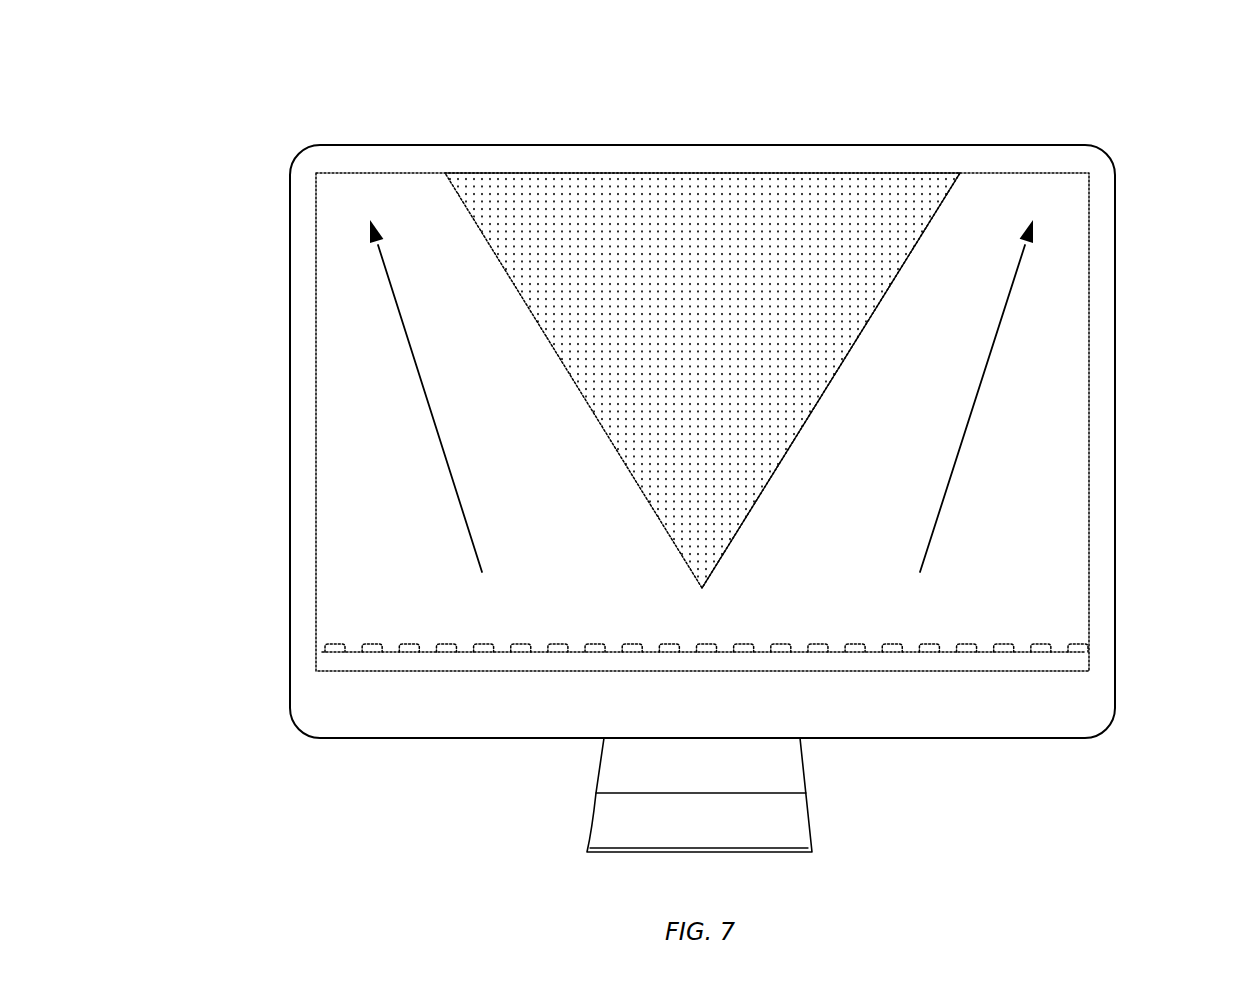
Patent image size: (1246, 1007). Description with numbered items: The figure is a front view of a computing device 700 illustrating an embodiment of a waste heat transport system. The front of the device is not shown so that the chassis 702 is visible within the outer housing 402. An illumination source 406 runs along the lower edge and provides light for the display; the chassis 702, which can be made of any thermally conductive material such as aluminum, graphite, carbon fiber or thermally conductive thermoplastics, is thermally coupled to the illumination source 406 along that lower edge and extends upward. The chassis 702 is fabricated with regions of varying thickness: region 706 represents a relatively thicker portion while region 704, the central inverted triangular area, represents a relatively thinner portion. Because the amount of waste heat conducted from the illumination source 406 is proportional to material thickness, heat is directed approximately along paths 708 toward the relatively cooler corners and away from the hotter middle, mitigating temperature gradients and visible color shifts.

The computing device 700 is at (250, 98).
The housing 402 is at (290, 305).
The chassis 702 is at (316, 480).
The region 704 is at (685, 216).
The region 706 is at (940, 265).
The paths 708 is at (988, 369).
The illumination source 406 is at (316, 662).